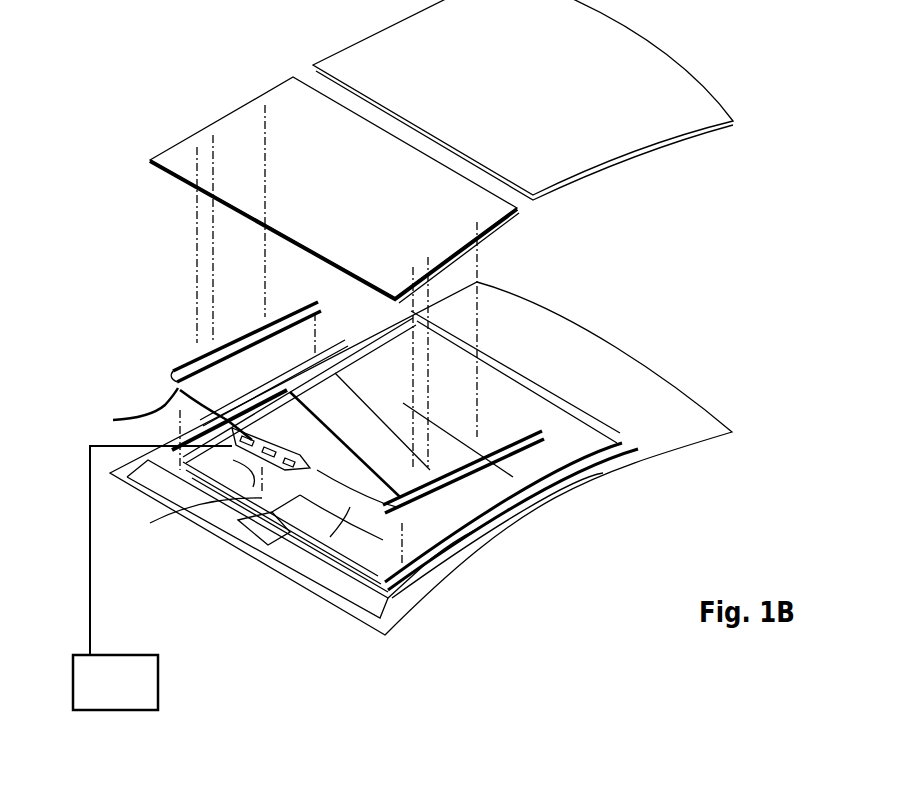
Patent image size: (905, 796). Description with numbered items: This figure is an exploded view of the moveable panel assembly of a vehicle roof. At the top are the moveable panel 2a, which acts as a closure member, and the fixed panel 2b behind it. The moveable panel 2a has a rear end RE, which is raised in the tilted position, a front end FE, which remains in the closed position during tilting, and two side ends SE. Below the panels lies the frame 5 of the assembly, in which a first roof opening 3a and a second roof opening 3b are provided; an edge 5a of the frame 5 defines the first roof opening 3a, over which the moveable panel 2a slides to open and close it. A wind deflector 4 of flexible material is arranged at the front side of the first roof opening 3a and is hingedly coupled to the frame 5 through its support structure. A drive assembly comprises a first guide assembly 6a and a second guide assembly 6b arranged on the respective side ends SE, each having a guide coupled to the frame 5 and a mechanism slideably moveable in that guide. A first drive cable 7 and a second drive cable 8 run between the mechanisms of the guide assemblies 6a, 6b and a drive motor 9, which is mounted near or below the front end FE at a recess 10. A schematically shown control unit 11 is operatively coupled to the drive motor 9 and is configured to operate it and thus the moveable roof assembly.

The moveable panel 2a is at (356, 196).
The fixed panel 2b is at (546, 100).
The first roof opening 3a is at (346, 458).
The second roof opening 3b is at (521, 416).
The wind deflector 4 is at (178, 465).
The frame 5 is at (467, 568).
The edge 5a is at (478, 536).
The first guide assembly 6a is at (485, 481).
The second guide assembly 6b is at (176, 341).
The first drive cable 7 is at (352, 543).
The second drive cable 8 is at (172, 414).
The drive motor 9 is at (228, 497).
The recess 10 is at (252, 513).
The control unit 11 is at (126, 693).
The rear end RE is at (340, 102).
The side end SE is at (223, 112).
The front end FE is at (240, 230).